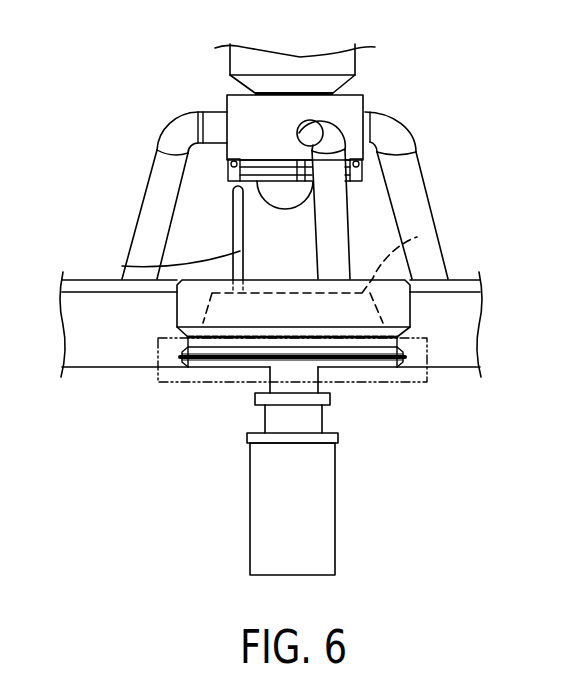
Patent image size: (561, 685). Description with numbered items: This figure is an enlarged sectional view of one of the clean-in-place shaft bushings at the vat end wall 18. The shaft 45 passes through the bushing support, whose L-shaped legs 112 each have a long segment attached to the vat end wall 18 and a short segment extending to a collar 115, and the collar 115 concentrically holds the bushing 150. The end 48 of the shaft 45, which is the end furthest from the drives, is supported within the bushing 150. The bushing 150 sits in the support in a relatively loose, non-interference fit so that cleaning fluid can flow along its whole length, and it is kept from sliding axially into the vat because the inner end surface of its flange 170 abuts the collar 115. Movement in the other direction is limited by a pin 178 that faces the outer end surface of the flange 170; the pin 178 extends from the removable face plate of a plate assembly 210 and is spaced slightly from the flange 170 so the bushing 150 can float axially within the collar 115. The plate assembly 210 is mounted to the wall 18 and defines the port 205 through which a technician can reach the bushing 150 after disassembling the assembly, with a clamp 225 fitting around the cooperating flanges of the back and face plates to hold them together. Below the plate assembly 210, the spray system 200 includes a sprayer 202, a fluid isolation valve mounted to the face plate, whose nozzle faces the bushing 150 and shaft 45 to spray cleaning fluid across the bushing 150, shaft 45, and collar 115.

The vat end wall 18 is at (108, 343).
The shaft 45 is at (348, 62).
The end of shaft 48 is at (292, 200).
The legs 112 is at (152, 210).
The collar 115 is at (245, 105).
The bushing 150 is at (222, 184).
The flange 170 is at (372, 162).
The pin 178 is at (122, 266).
The spray system 200 is at (342, 409).
The sprayer 202 is at (314, 508).
The port 205 is at (418, 237).
The plate assembly 210 is at (430, 310).
The clamp 225 is at (178, 386).